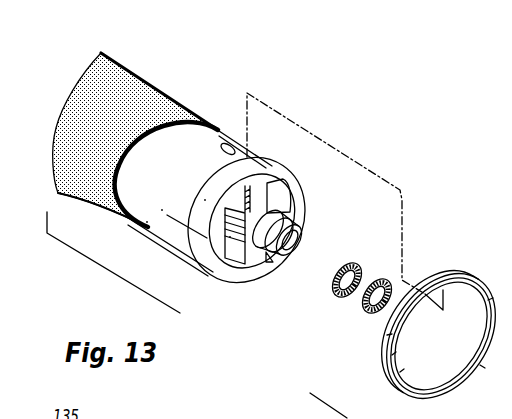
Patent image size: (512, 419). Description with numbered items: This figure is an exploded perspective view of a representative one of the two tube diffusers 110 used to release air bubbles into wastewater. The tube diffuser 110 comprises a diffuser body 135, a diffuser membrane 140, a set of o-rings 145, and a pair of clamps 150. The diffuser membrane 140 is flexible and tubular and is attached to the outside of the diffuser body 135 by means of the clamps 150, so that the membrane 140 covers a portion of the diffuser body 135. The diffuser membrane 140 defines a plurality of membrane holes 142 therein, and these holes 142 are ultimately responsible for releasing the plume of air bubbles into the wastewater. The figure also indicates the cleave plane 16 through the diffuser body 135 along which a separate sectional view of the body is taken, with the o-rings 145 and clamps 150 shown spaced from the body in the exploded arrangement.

The tube diffuser 110 is at (193, 100).
The diffuser body 135 is at (170, 258).
The diffuser membrane 140 is at (78, 202).
The membrane holes 142 is at (127, 101).
The o-rings 145 is at (355, 262).
The clamps 150 is at (390, 362).
The sectional view cleave plane 16 is at (173, 169).